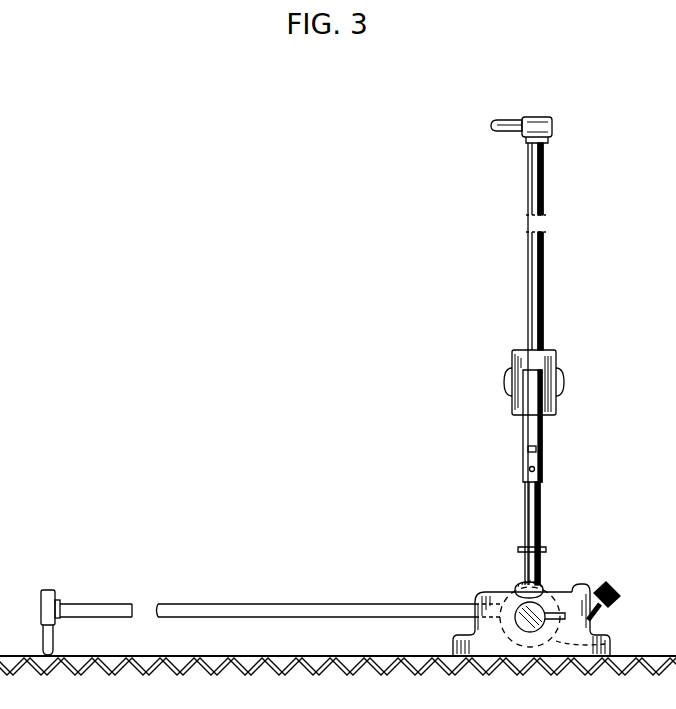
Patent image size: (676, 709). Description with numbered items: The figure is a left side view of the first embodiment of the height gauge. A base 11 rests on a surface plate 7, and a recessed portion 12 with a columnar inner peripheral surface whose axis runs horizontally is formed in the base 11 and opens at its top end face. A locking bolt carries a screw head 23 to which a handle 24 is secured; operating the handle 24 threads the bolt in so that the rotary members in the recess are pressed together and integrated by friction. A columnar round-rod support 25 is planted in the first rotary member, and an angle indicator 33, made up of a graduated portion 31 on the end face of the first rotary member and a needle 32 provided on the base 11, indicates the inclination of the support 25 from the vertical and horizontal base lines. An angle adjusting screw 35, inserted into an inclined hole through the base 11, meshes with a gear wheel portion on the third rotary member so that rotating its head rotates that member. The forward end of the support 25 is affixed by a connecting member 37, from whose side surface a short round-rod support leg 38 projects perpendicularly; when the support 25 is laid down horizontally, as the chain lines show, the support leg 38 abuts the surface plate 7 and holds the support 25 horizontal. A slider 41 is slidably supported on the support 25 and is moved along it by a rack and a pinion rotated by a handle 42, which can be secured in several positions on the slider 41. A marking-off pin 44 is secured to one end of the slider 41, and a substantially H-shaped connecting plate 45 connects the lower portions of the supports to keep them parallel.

The surface plate 7 is at (305, 656).
The base 11 is at (453, 645).
The recessed portion 12 is at (606, 647).
The screw head 23 is at (543, 600).
The handle 24 is at (560, 600).
The first support 25 is at (246, 600).
The graduated portion 31 is at (522, 585).
The needle 32 is at (512, 579).
The angle indicator 33 is at (493, 560).
The angle adjusting screw 35 is at (598, 610).
The connecting member 37 is at (545, 118).
The support leg 38 is at (508, 120).
The slider 41 is at (521, 352).
The handle 42 is at (504, 383).
The marking-off pin 44 is at (529, 469).
The connecting plate 45 is at (547, 548).